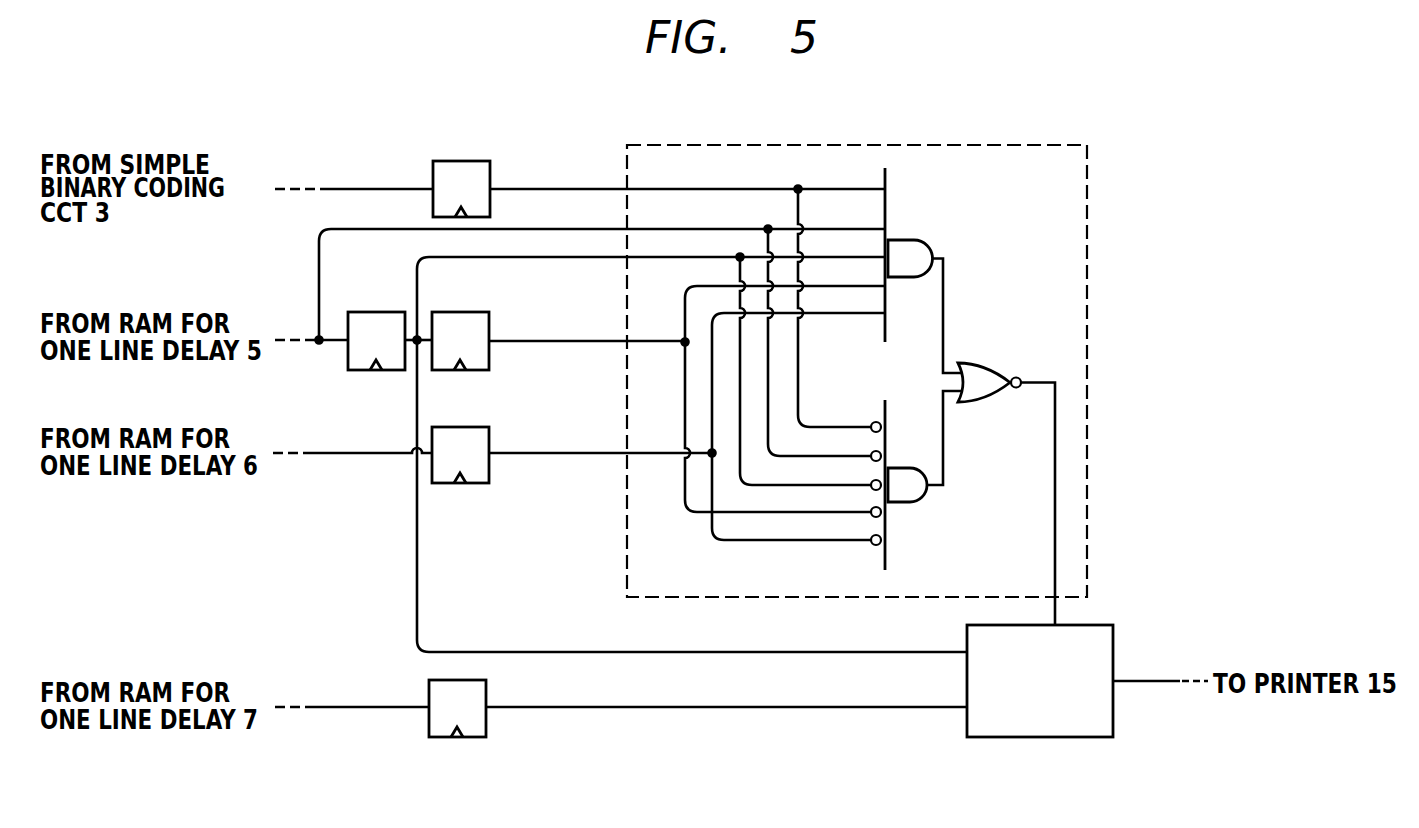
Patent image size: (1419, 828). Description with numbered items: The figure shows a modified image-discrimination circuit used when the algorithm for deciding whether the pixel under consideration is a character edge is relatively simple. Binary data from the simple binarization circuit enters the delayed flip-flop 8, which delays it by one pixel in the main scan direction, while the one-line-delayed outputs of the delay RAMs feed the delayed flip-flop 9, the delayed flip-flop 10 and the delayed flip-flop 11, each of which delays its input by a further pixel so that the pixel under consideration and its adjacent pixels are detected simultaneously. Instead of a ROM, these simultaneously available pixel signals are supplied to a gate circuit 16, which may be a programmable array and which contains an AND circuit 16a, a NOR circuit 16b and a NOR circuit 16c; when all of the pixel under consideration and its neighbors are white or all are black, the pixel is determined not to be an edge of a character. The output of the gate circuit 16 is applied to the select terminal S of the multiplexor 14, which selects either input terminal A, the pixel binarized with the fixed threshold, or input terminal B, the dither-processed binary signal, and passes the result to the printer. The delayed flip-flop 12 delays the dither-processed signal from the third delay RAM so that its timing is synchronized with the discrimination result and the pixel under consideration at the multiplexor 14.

The delayed flip-flop 8 is at (486, 160).
The delayed flip-flop 9 is at (395, 311).
The delayed flip-flop 10 is at (474, 311).
The delayed flip-flop 11 is at (474, 426).
The delayed flip-flop 12 is at (486, 688).
The multiplexor 14 is at (1113, 637).
The gate circuit 16 is at (886, 385).
The AND circuit 16a is at (918, 240).
The NOR circuit 16b is at (980, 362).
The NOR circuit 16c is at (912, 503).